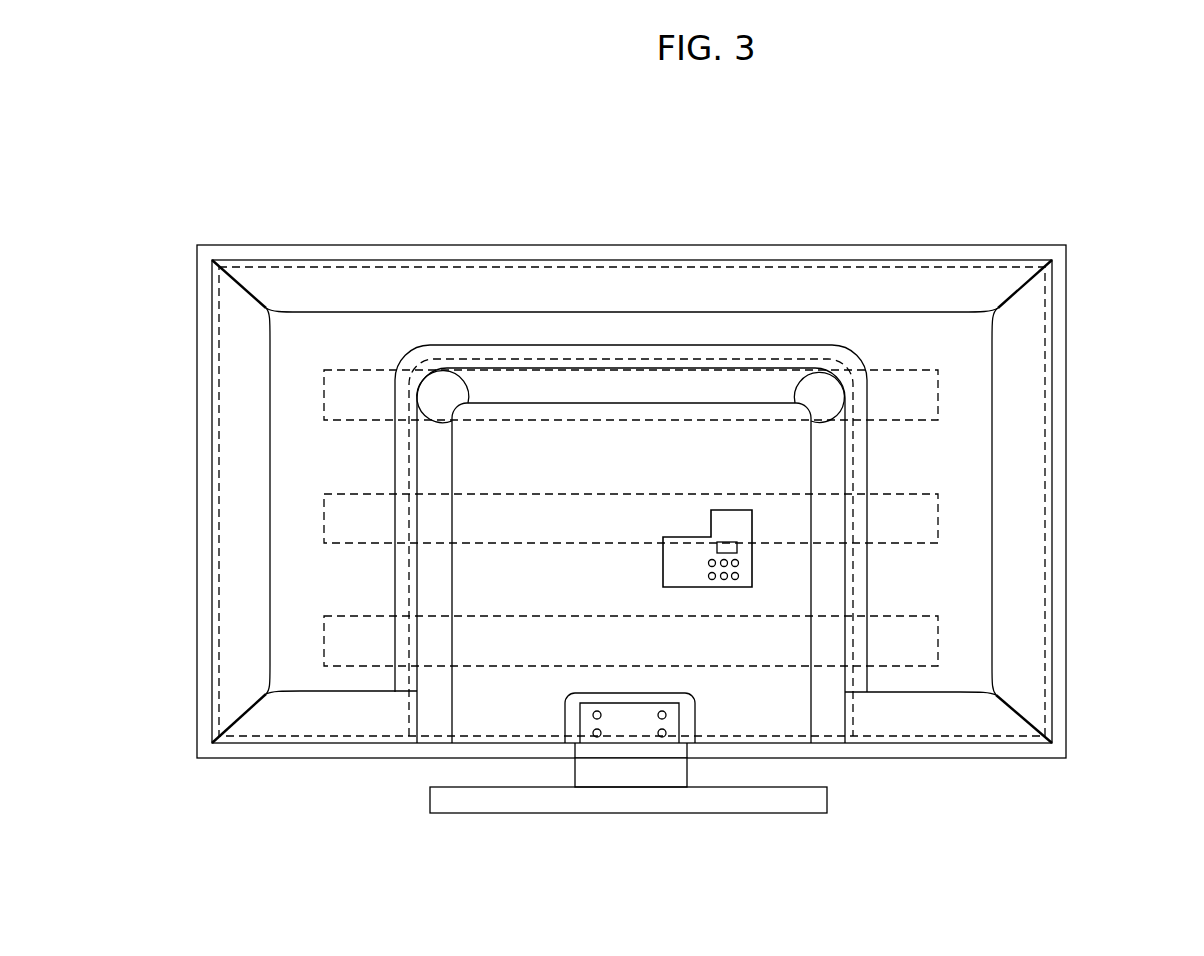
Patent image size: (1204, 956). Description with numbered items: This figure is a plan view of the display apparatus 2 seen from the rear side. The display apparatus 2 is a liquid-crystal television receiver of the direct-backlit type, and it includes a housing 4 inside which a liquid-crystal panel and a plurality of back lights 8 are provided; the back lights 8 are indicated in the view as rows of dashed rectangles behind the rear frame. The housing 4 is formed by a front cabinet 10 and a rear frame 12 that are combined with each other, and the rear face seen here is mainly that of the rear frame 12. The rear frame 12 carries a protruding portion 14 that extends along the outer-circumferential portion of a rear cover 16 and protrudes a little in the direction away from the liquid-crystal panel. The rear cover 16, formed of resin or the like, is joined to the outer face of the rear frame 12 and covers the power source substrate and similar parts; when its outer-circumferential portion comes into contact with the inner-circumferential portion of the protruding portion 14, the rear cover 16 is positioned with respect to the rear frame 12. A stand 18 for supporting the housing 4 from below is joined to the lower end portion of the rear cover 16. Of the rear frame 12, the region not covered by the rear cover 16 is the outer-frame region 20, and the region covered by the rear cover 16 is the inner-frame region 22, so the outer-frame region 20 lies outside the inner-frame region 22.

The display apparatus 2 is at (1012, 207).
The housing 4 is at (697, 501).
The back lights 8 is at (324, 633).
The front cabinet 10 is at (1060, 292).
The rear frame 12 is at (1025, 335).
The protruding portion 14 is at (655, 347).
The rear cover 16 is at (790, 460).
The stand 18 is at (812, 800).
The outer-frame region 20 is at (1020, 470).
The inner-frame region 22 is at (790, 584).